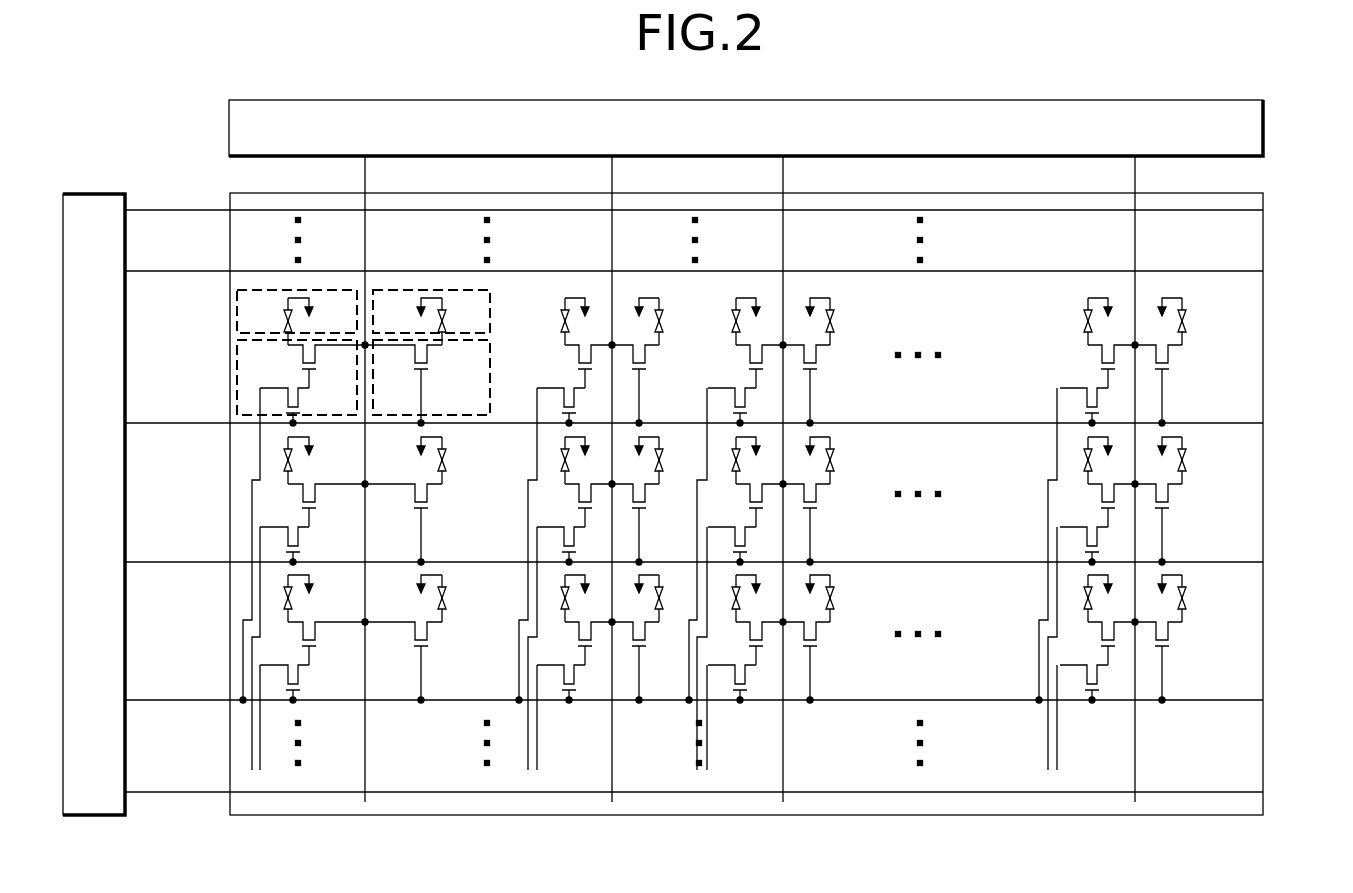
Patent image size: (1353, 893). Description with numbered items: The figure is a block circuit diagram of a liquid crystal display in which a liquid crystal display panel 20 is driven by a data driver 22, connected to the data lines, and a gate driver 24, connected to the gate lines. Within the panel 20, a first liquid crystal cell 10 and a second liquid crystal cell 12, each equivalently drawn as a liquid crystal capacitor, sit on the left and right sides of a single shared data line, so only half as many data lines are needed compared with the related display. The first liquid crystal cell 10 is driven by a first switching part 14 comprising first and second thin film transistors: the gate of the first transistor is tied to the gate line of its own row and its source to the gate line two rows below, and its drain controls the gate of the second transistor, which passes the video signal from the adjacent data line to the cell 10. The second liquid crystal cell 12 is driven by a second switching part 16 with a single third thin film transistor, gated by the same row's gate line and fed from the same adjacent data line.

The first liquid crystal cell 10 is at (233, 315).
The second liquid crystal cell 12 is at (491, 313).
The first switching part 14 is at (235, 369).
The second switching part 16 is at (491, 373).
The liquid crystal display panel 20 is at (724, 485).
The data driver 22 is at (1265, 127).
The gate driver 24 is at (89, 192).